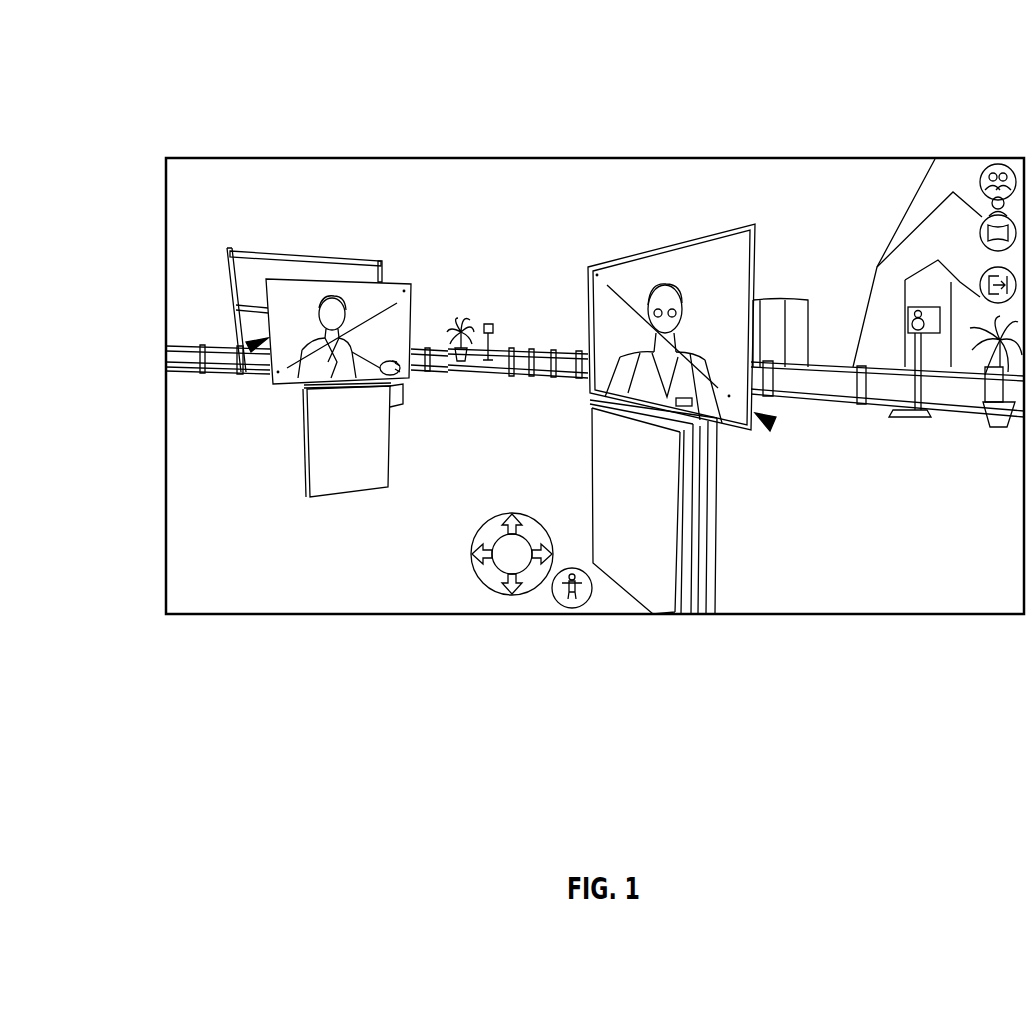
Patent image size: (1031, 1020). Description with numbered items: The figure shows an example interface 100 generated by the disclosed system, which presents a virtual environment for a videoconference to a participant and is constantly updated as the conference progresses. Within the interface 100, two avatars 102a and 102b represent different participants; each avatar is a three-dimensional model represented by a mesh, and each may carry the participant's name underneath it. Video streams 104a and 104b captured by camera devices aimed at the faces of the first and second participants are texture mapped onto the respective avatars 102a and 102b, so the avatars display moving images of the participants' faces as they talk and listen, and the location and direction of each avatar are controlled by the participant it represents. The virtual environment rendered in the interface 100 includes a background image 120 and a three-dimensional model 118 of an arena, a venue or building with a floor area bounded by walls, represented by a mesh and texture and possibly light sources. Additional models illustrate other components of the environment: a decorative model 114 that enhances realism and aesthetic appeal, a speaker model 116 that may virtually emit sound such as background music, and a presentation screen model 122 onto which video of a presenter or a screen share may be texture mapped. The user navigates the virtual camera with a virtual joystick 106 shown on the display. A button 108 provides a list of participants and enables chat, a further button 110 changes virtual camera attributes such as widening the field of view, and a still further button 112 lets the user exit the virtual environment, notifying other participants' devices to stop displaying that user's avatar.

The interface 100 is at (63, 44).
The avatar 102a is at (400, 276).
The avatar 102b is at (677, 243).
The video stream 104a is at (244, 377).
The video stream 104b is at (777, 431).
The virtual joystick 106 is at (470, 549).
The button 108 is at (985, 167).
The further button 110 is at (980, 230).
The still further button 112 is at (980, 281).
The decorative model 114 is at (998, 430).
The speaker model 116 is at (920, 377).
The 3D model of an arena 118 is at (520, 312).
The background image 120 is at (876, 172).
The presentation screen model 122 is at (257, 254).